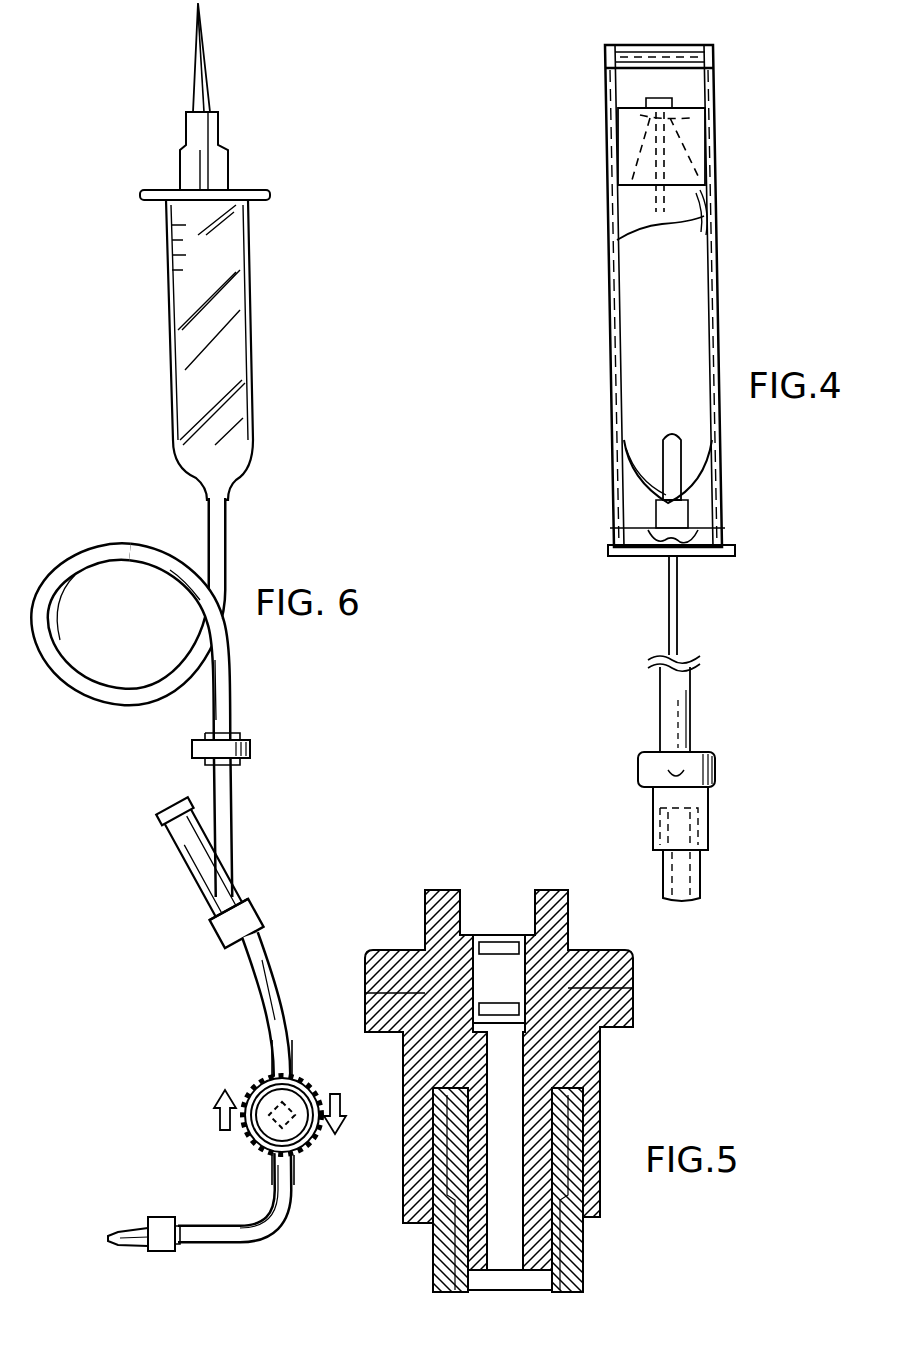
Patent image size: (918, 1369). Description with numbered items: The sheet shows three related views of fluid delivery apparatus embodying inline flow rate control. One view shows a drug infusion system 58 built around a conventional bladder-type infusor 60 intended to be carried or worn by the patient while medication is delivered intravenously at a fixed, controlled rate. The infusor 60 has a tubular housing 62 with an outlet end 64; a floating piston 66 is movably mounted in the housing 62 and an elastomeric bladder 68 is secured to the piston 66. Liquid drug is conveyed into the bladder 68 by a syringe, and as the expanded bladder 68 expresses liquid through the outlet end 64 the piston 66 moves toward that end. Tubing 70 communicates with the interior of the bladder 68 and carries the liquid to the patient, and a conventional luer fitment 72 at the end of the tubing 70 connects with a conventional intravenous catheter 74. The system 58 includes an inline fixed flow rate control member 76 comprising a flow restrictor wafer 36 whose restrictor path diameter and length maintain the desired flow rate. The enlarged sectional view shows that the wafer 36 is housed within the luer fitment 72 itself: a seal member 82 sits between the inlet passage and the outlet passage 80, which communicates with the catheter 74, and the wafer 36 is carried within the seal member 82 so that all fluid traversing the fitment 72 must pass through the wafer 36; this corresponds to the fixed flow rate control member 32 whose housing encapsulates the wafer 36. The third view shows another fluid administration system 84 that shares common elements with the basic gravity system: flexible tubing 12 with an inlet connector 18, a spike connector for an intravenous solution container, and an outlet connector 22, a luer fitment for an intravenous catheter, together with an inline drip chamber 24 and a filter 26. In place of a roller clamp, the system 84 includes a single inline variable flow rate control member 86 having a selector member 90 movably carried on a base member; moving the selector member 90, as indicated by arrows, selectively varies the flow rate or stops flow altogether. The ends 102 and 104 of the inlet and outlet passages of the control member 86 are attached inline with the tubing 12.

In FIG. 6, the tubing 12 is at (229, 560).
In FIG. 6, the connector 18 is at (194, 118).
In FIG. 6, the connector 22 is at (160, 1224).
In FIG. 6, the drip chamber 24 is at (172, 300).
In FIG. 6, the filter 26 is at (248, 742).
In FIG. 5, the fixed flow rate control member 32 is at (668, 1033).
In FIG. 4, the flow restrictor wafer 36 is at (688, 729).
In FIG. 5, the flow restrictor wafer 36 is at (508, 983).
In FIG. 4, the drug infusion system 58 is at (748, 190).
In FIG. 4, the bladder-type infusor 60 is at (716, 146).
In FIG. 4, the tubular housing 62 is at (608, 205).
In FIG. 4, the outlet end 64 is at (708, 553).
In FIG. 4, the floating piston 66 is at (690, 128).
In FIG. 4, the elastomeric bladder 68 is at (672, 283).
In FIG. 4, the tubing 70 is at (678, 629).
In FIG. 4, the luer fitment 72 is at (690, 801).
In FIG. 5, the luer fitment 72 is at (583, 1046).
In FIG. 4, the intravenous catheter 74 is at (692, 870).
In FIG. 5, the intravenous catheter 74 is at (570, 1249).
In FIG. 4, the fixed flow rate control member 76 is at (735, 754).
In FIG. 5, the fixed flow rate control member 76 is at (512, 905).
In FIG. 5, the outlet passage 80 is at (500, 1080).
In FIG. 5, the seal member 82 is at (545, 942).
In FIG. 6, the fluid administration system 84 is at (150, 350).
In FIG. 6, the variable flow rate control member 86 is at (200, 1120).
In FIG. 6, the selector member 90 is at (258, 1086).
In FIG. 6, the inlet passage end 102 is at (290, 1054).
In FIG. 6, the outlet passage end 104 is at (282, 1166).